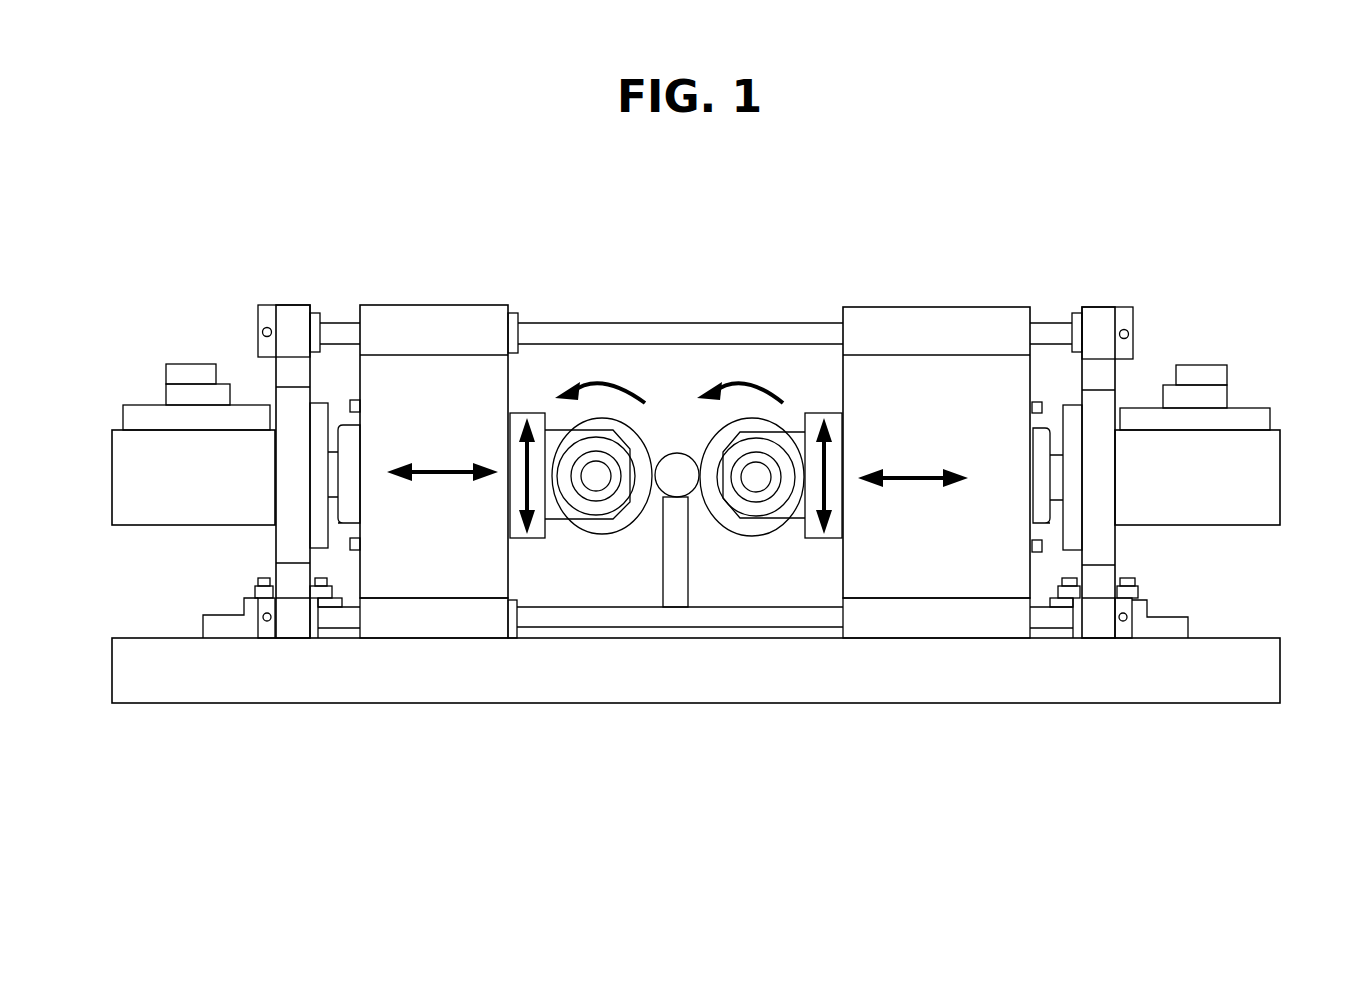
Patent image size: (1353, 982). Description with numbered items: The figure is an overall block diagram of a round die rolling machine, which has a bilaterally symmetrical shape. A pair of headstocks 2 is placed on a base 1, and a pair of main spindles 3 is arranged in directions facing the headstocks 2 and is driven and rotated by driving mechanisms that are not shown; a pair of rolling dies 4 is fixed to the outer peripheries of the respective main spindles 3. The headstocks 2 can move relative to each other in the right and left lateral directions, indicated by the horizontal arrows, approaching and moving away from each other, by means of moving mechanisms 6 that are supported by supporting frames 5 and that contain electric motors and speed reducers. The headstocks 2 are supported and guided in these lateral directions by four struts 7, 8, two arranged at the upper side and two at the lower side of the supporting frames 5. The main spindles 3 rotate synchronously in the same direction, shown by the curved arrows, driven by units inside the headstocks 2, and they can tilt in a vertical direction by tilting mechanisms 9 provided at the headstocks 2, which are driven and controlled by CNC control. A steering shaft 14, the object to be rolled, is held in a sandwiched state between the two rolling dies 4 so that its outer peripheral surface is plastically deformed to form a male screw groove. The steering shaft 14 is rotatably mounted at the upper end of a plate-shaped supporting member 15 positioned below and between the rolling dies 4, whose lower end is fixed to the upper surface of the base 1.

The base 1 is at (1052, 687).
The headstock 2 is at (428, 327).
The main spindle 3 is at (596, 478).
The rolling die 4 is at (613, 430).
The supporting frame 5 is at (288, 403).
The moving mechanism 6 is at (160, 513).
The strut 7 is at (775, 332).
The strut 8 is at (784, 620).
The tilting mechanism 9 is at (517, 487).
The steering shaft 14 is at (673, 482).
The supporting member 15 is at (676, 590).